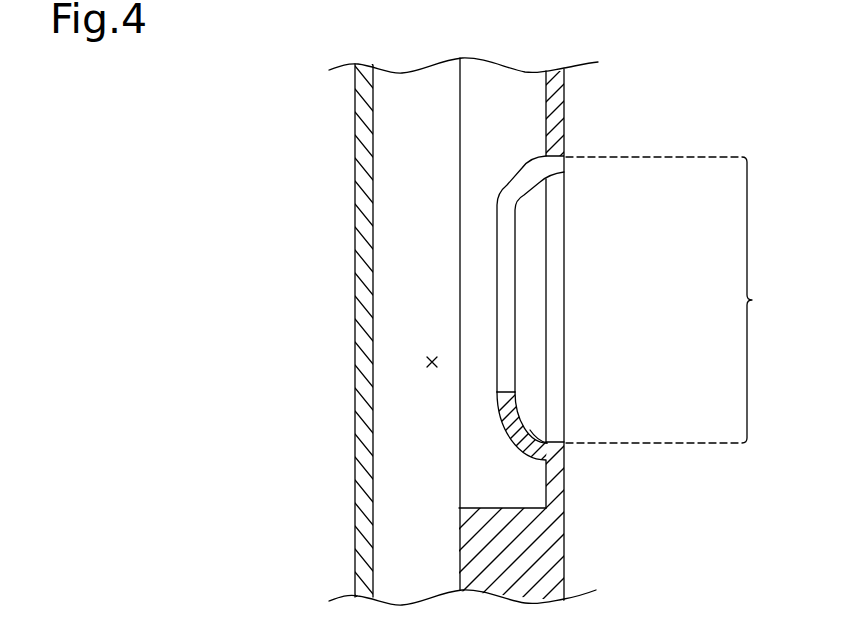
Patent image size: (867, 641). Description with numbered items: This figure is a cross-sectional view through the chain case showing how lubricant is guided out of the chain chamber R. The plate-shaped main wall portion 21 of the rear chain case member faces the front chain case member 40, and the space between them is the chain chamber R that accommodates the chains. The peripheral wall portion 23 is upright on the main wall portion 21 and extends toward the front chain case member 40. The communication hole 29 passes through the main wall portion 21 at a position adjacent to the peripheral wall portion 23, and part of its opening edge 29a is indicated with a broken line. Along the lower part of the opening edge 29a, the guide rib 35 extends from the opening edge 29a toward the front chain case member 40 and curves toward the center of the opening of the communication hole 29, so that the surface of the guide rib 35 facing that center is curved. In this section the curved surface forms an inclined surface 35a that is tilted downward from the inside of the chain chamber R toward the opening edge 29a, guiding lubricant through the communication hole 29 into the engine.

The main wall portion 21 is at (564, 103).
The peripheral wall portion 23 is at (479, 543).
The communication hole 29 is at (676, 300).
The opening edge 29a is at (549, 442).
The guide rib 35 is at (517, 451).
The inclined surface 35a is at (543, 422).
The front chain case member 40 is at (355, 196).
The chain chamber R is at (427, 362).